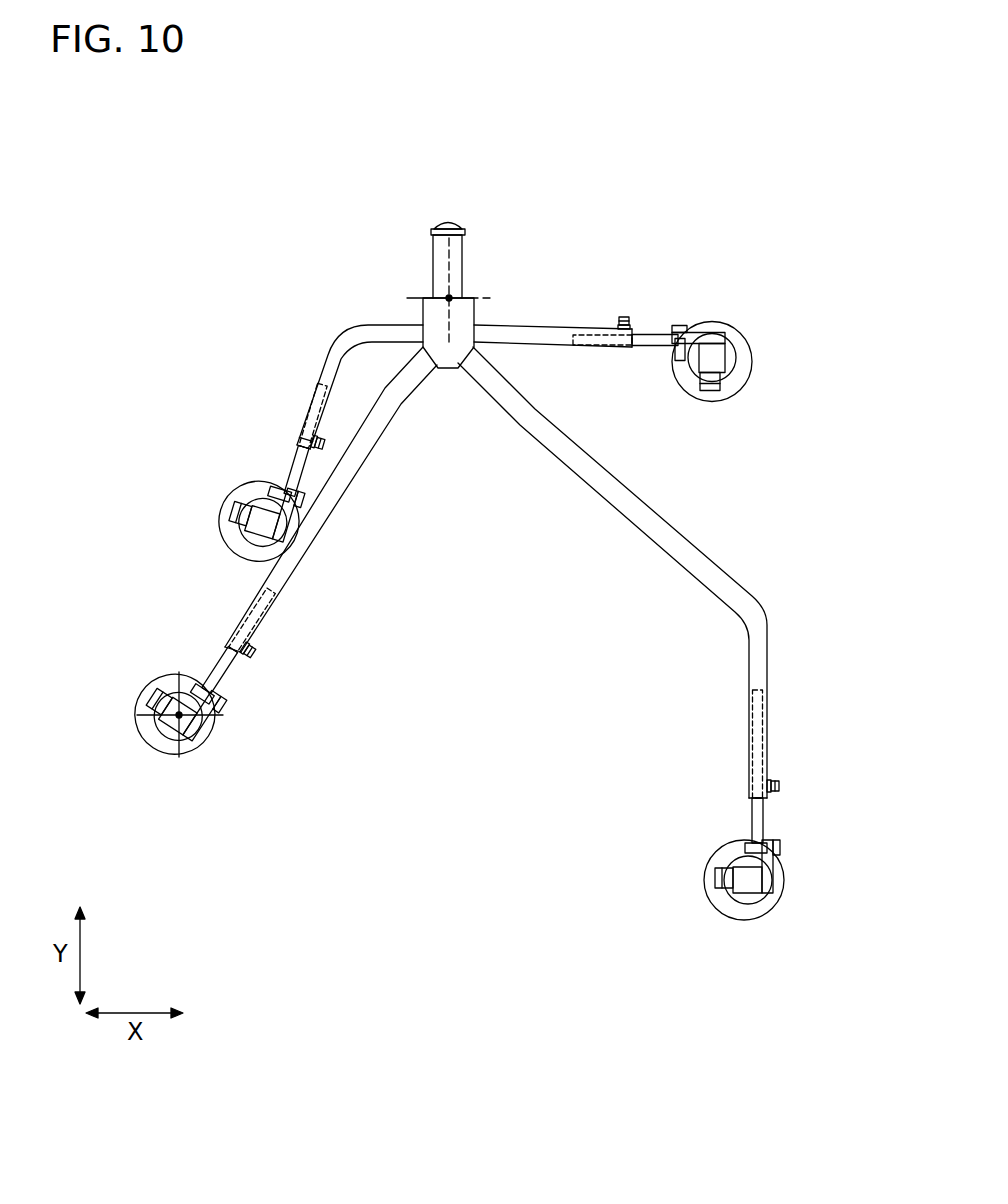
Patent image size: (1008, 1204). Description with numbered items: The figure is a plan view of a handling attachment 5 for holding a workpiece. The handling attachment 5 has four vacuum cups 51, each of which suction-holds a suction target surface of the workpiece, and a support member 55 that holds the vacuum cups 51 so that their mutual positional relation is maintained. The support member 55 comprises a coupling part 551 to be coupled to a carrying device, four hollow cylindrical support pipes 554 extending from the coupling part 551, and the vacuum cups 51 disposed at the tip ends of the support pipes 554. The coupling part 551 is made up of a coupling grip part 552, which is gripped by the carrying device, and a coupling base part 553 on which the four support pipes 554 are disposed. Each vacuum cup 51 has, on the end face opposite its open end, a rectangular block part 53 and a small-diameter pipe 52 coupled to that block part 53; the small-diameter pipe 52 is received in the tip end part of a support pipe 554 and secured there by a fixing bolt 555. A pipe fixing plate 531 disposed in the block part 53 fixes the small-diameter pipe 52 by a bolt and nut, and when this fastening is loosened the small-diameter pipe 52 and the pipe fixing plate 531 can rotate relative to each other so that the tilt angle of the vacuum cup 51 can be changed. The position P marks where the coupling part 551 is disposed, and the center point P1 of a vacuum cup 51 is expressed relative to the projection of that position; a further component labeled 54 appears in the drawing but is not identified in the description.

The handling attachment 5 is at (603, 172).
The vacuum cup 51 is at (710, 323).
The small-diameter pipe 52 is at (292, 467).
The block part 53 is at (717, 357).
The caster 54 is at (248, 503).
The support member 55 is at (506, 320).
The coupling part 551 is at (425, 235).
The coupling grip part 552 is at (443, 222).
The coupling base part 553 is at (462, 318).
The support pipe 554 is at (345, 340).
The fixing bolt 555 is at (620, 316).
The pipe fixing plate 531 is at (722, 333).
The position P is at (449, 298).
The center point P1 is at (179, 718).